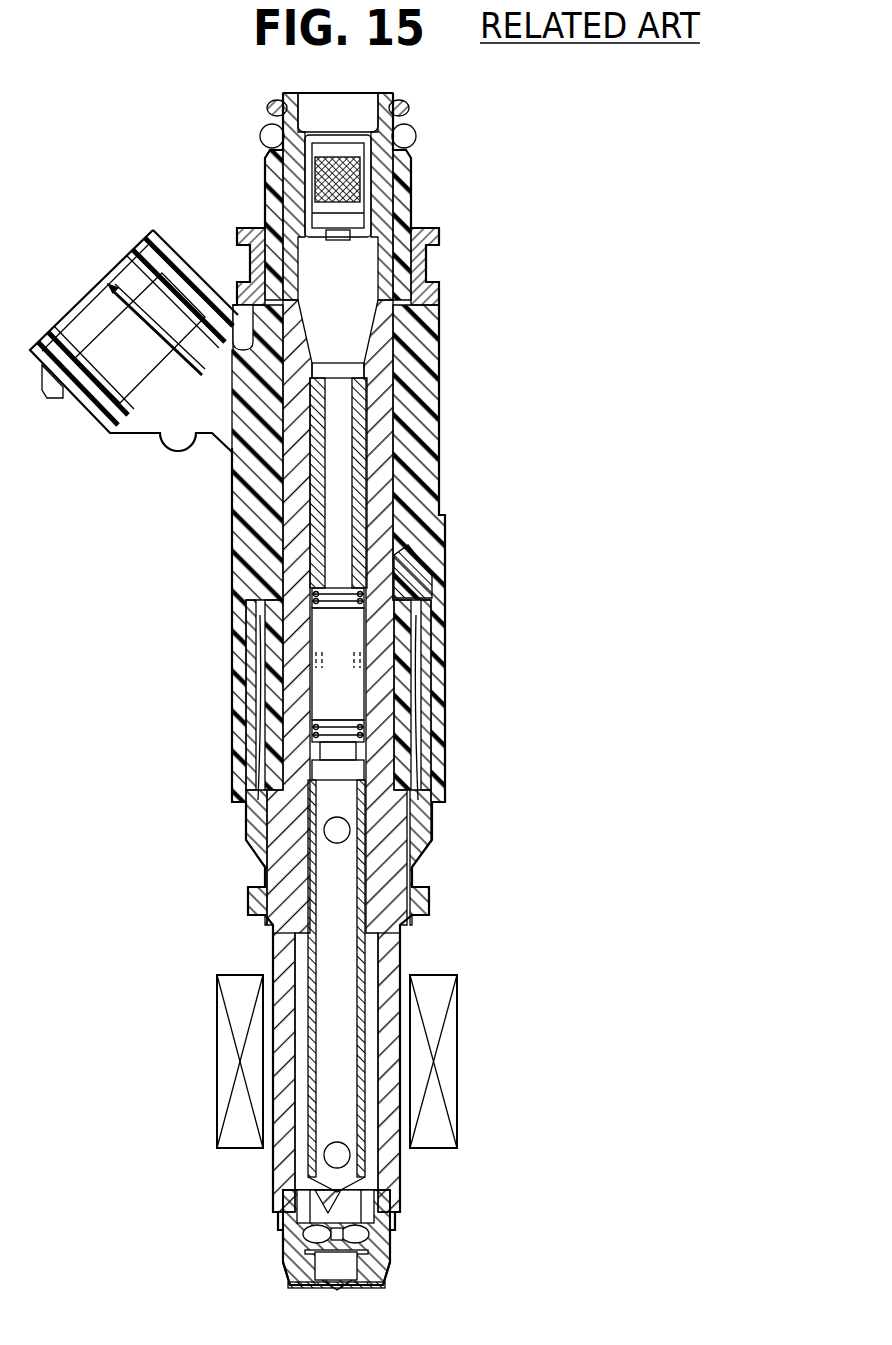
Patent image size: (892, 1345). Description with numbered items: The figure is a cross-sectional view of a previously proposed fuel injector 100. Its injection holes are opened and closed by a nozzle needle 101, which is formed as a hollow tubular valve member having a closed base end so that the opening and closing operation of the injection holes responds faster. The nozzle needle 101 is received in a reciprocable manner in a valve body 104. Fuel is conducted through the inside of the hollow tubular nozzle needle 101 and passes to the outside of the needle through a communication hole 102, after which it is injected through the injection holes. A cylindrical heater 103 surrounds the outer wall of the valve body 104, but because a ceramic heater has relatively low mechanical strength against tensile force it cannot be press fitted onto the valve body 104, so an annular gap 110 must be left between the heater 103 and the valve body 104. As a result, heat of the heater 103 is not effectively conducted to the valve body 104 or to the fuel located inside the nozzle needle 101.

The injector 100 is at (444, 368).
The nozzle needle 101 is at (310, 955).
The communication hole 102 is at (340, 1156).
The heater 103 is at (447, 1025).
The valve body 104 is at (390, 958).
The annular gap 110 is at (403, 1097).